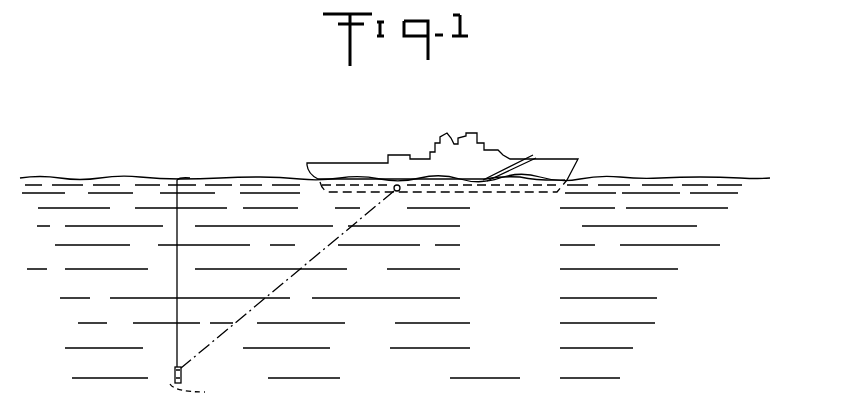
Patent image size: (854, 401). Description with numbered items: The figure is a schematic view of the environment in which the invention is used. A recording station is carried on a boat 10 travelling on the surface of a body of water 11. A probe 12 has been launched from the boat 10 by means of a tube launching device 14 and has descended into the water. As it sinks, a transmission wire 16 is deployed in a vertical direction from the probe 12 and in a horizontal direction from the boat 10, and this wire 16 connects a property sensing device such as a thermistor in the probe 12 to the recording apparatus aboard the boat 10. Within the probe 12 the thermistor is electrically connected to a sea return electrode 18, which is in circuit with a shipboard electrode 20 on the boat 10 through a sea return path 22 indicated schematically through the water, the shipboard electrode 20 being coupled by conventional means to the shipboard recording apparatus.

The boat 10 is at (456, 130).
The body of water 11 is at (432, 292).
The probe 12 is at (185, 365).
The tube launching device 14 is at (522, 157).
The transmission wire 16 is at (178, 256).
The sea return electrode 18 is at (202, 392).
The shipboard electrode 20 is at (399, 193).
The sea return path 22 is at (297, 274).